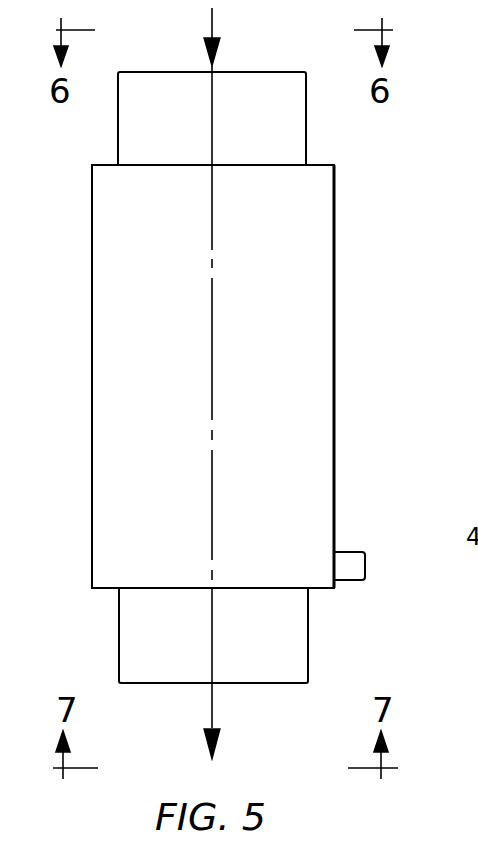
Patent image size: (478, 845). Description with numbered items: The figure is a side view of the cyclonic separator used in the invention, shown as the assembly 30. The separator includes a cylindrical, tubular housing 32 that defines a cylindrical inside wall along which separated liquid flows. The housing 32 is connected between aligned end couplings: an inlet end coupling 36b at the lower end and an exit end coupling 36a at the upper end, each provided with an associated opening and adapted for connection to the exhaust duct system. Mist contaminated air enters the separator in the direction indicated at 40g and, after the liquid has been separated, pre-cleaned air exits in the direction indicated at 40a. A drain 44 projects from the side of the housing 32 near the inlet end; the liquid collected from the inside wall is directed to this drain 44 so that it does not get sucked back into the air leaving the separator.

The vial assembly 30 is at (346, 254).
The tubular housing 32 is at (339, 345).
The exit end coupling 36a is at (308, 140).
The inlet end coupling 36b is at (309, 611).
The pre-cleaned air exit flow 40a is at (214, 22).
The mist contaminated air inlet flow 40g is at (213, 713).
The drain 44 is at (346, 552).